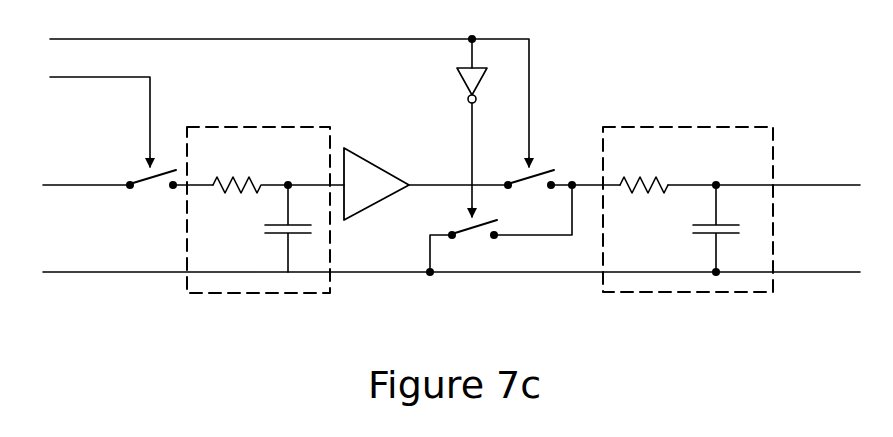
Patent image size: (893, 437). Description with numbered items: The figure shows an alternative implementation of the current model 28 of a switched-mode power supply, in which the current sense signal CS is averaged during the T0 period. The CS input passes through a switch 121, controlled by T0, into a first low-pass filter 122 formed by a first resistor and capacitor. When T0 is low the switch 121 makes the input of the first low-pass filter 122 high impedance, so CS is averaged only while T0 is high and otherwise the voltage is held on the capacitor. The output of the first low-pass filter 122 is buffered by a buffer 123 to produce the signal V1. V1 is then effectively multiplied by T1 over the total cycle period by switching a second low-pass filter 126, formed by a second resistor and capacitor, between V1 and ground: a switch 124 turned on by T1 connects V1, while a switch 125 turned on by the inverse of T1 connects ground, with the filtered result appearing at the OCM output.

The sample-and-hold / switched RC circuit 28 is at (106, 370).
The switch 121 is at (151, 196).
The first low-pass filter 122 is at (258, 196).
The buffer 123 is at (376, 178).
The switch 124 is at (529, 193).
The switch 125 is at (473, 243).
The second low-pass filter 126 is at (688, 195).